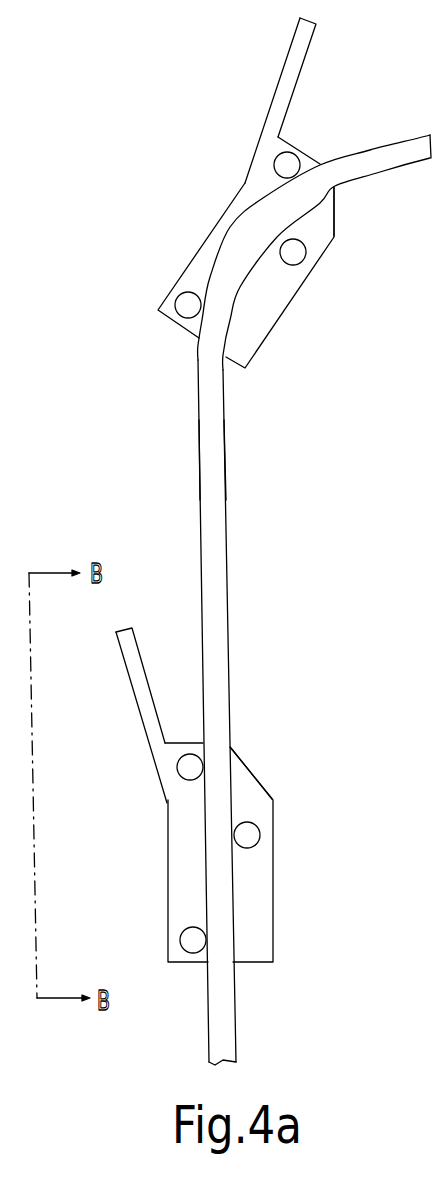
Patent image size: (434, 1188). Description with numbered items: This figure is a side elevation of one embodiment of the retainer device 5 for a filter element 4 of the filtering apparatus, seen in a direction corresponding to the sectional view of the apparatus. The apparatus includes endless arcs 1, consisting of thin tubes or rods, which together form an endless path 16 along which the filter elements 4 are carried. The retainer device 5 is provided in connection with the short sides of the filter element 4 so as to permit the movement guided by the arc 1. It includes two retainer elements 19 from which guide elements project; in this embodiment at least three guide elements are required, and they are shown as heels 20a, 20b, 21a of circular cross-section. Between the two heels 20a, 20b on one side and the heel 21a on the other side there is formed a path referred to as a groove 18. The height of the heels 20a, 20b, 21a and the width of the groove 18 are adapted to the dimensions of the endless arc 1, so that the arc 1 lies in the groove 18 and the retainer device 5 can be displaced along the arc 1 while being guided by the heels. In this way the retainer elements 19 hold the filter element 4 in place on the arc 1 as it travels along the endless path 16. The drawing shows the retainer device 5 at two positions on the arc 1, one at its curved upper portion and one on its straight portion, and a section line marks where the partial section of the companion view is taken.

The endless arc 1 is at (218, 547).
The filter element 4 is at (285, 90).
The retainer device 5 is at (220, 230).
The endless path 16 is at (213, 477).
The groove 18 is at (278, 238).
The retainer element 19 is at (187, 823).
The heel 20a is at (285, 172).
The heel 20b is at (183, 312).
The heel 21a is at (297, 257).